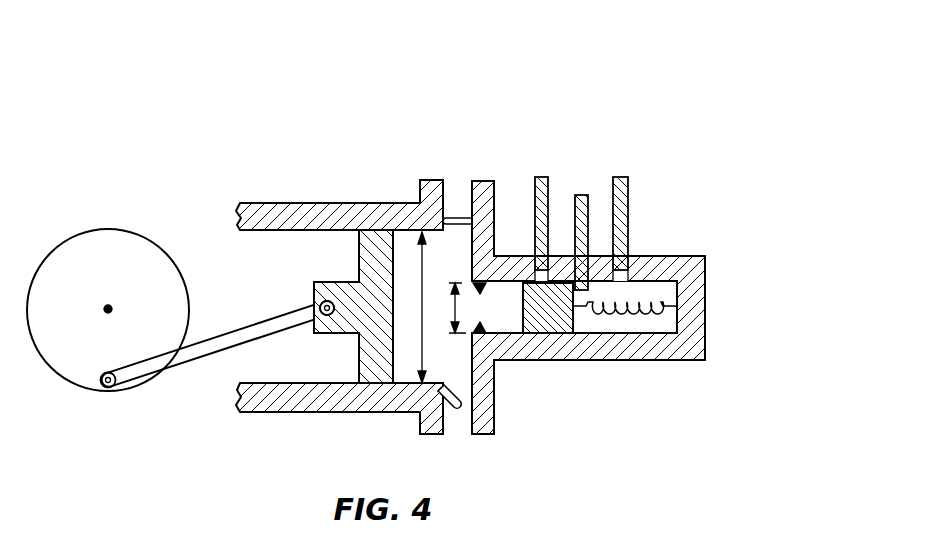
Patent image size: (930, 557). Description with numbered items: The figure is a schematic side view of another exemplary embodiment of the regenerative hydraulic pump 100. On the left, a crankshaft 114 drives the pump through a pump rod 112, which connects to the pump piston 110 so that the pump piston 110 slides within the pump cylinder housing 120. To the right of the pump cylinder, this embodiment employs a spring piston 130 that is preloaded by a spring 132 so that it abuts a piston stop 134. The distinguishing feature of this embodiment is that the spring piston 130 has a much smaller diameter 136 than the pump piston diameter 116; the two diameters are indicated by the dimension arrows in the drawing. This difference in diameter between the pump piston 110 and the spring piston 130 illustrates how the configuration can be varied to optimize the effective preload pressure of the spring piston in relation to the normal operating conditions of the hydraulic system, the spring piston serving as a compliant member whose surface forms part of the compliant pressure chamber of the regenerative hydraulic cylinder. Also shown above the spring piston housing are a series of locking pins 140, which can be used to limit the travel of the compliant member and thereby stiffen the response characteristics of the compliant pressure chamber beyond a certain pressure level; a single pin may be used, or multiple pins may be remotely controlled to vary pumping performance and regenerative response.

The regenerative hydraulic pump 100 is at (497, 88).
The pump piston 110 is at (370, 357).
The pump rod 112 is at (215, 348).
The crankshaft 114 is at (118, 248).
The pump piston diameter 116 is at (418, 310).
The pump cylinder housing 120 is at (310, 215).
The spring piston 130 is at (565, 322).
The spring 132 is at (642, 312).
The piston stop 134 is at (484, 325).
The spring piston diameter 136 is at (497, 277).
The locking pins 140 is at (627, 205).